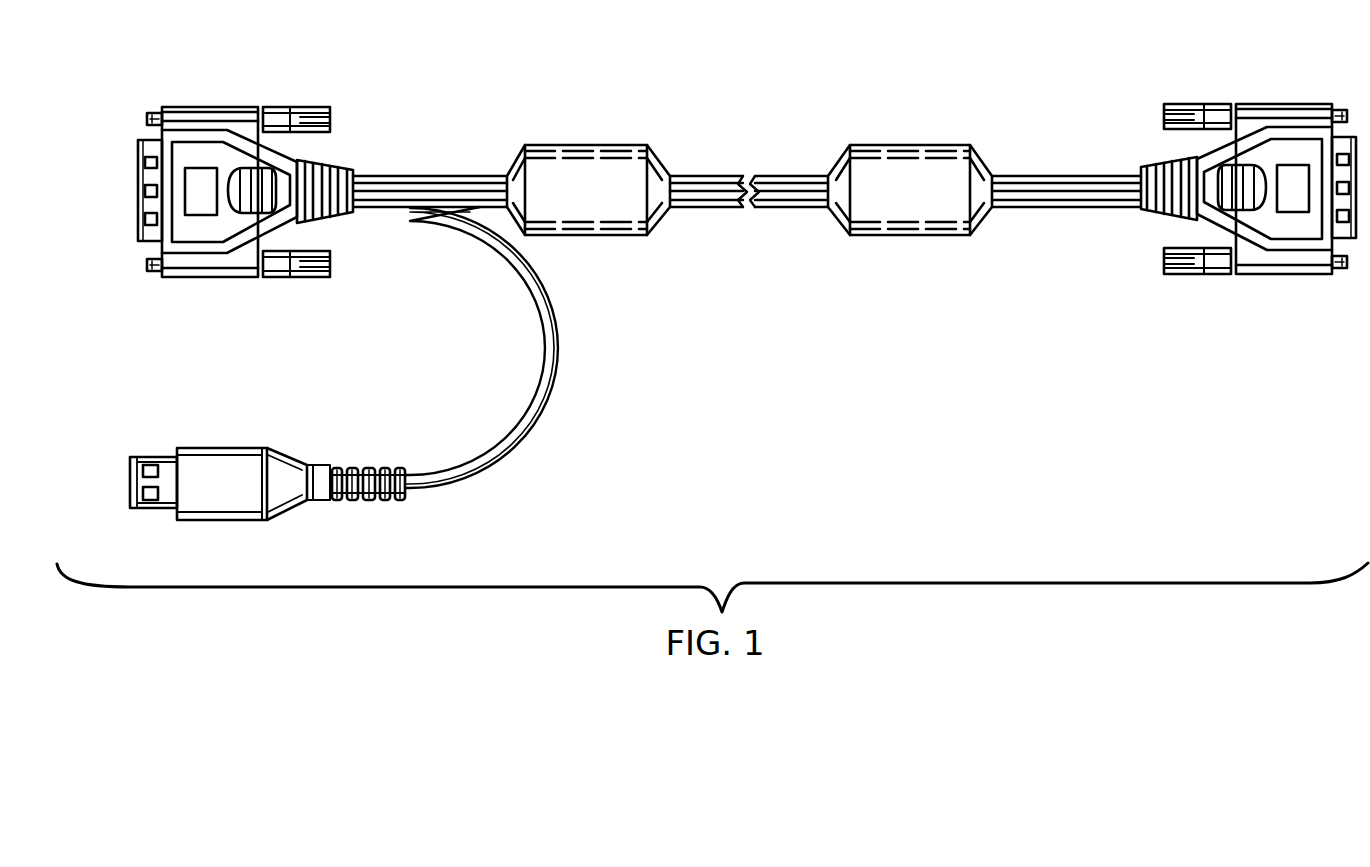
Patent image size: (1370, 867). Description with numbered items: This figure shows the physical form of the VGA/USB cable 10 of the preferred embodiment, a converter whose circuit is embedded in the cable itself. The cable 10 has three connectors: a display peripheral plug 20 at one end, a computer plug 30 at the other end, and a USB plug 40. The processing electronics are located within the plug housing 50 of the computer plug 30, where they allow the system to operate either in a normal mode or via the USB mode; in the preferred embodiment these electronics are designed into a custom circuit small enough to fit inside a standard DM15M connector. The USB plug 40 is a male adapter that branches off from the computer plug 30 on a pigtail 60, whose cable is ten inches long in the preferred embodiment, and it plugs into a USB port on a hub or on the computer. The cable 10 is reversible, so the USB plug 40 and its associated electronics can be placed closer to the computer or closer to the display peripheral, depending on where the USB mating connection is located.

The cable 10 is at (677, 74).
The display peripheral plug 20 is at (1300, 104).
The computer plug 30 is at (273, 107).
The USB plug 40 is at (223, 448).
The plug housing 50 is at (184, 180).
The pigtail 60 is at (560, 328).